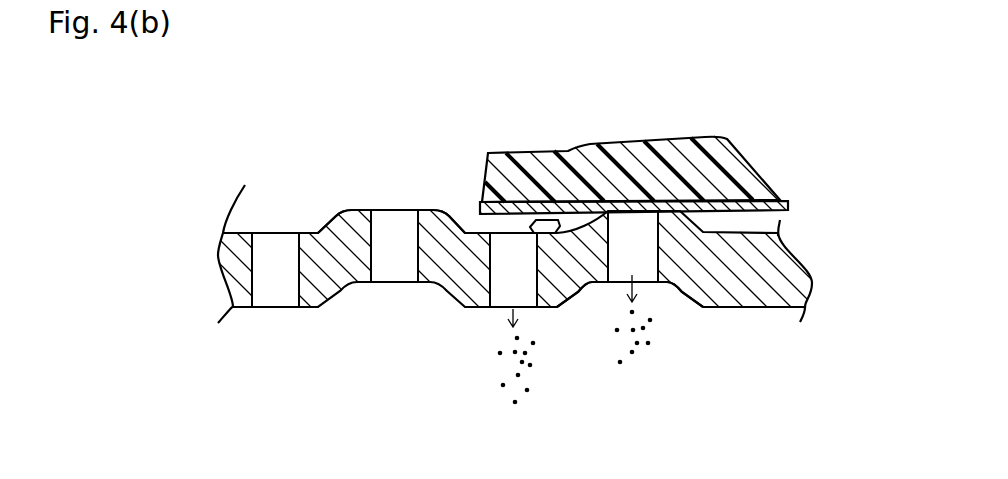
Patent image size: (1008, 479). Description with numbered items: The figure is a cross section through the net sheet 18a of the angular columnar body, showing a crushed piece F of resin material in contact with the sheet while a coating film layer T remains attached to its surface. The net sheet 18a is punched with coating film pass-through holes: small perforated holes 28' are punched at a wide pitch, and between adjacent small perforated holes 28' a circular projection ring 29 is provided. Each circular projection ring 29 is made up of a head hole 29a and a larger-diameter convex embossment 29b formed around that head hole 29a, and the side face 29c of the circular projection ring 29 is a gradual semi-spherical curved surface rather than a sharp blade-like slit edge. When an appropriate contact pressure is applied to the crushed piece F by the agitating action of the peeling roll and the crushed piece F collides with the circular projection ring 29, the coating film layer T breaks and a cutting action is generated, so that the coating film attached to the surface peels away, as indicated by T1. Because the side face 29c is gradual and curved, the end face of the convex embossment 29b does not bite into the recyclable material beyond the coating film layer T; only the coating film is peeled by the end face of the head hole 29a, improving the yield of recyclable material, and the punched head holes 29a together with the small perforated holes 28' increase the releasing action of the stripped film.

The net sheet 18a is at (772, 298).
The small perforated hole 28' is at (275, 331).
The circular projection ring 29 is at (513, 93).
The head hole 29a is at (392, 217).
The convex embossment 29b is at (322, 218).
The side face 29c is at (442, 218).
The crushed piece F is at (758, 173).
The coating film layer T is at (790, 205).
The peeled coating film T1 is at (555, 305).